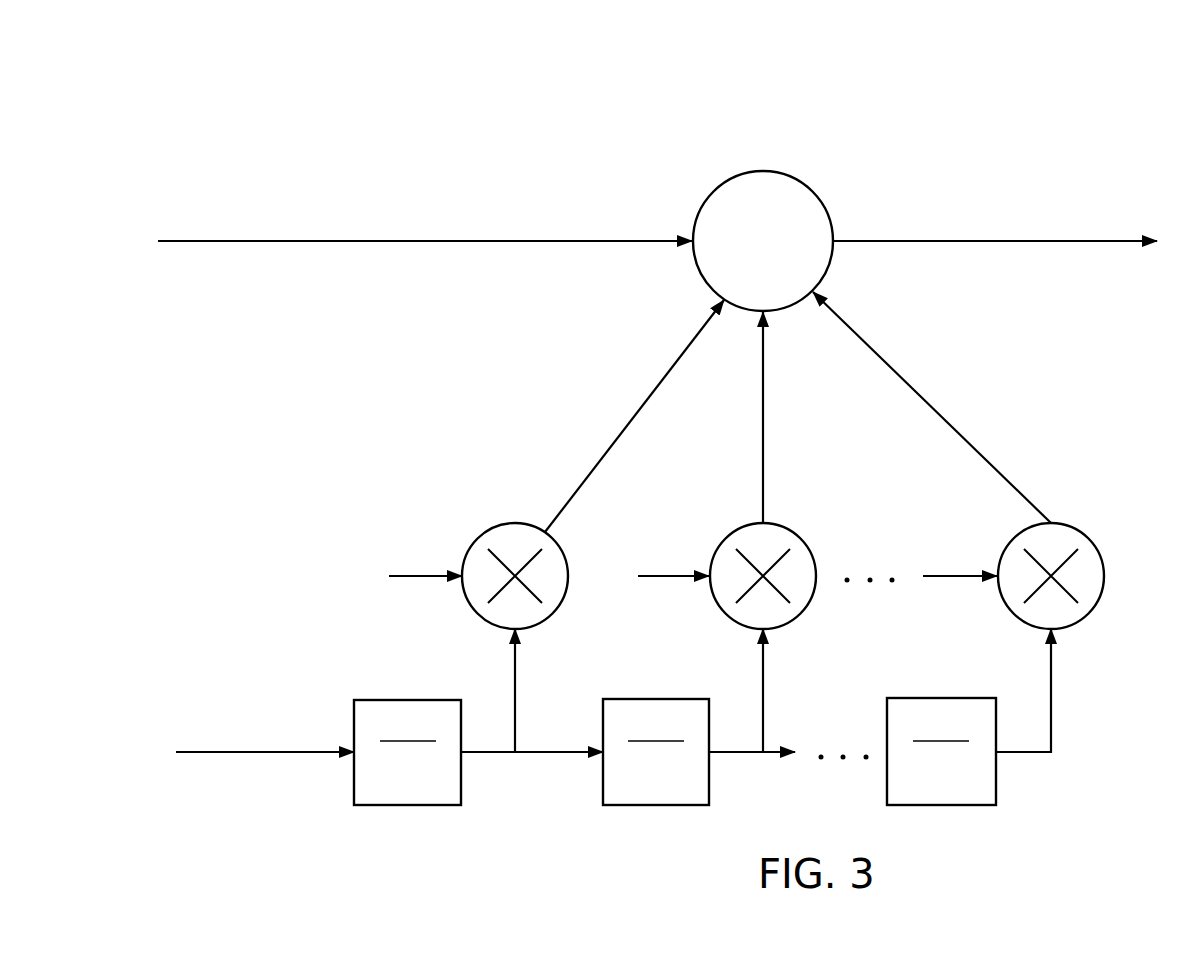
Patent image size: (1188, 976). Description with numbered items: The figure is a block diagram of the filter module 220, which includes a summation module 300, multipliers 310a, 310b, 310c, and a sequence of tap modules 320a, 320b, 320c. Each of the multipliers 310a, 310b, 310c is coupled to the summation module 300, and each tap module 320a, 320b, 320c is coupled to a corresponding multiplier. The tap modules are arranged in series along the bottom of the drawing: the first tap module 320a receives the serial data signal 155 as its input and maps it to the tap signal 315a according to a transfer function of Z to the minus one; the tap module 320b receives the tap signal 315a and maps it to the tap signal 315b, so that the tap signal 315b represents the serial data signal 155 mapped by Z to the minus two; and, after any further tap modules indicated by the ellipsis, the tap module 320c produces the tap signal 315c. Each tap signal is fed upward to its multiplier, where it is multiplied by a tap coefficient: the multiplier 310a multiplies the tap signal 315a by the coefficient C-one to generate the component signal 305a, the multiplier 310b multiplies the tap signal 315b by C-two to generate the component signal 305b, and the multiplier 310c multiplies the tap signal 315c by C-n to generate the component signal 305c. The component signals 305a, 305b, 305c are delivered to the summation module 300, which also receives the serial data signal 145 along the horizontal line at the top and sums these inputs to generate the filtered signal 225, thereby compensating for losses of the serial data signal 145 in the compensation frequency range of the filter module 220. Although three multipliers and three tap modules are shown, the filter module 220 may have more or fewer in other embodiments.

The filter module 220 is at (225, 60).
The serial data signal 145 is at (266, 241).
The summation module 300 is at (726, 176).
The filtered signal 225 is at (1050, 241).
The component signal 305a is at (607, 454).
The component signal 305b is at (763, 452).
The component signal 305c is at (980, 454).
The multiplier 310a is at (490, 529).
The multiplier 310b is at (738, 529).
The multiplier 310c is at (1017, 529).
The serial data signal 155 is at (284, 752).
The tap module 320a is at (407, 752).
The tap module 320b is at (628, 752).
The tap module 320c is at (941, 751).
The tap signal 315a is at (516, 682).
The tap signal 315b is at (764, 682).
The tap signal 315c is at (1052, 682).